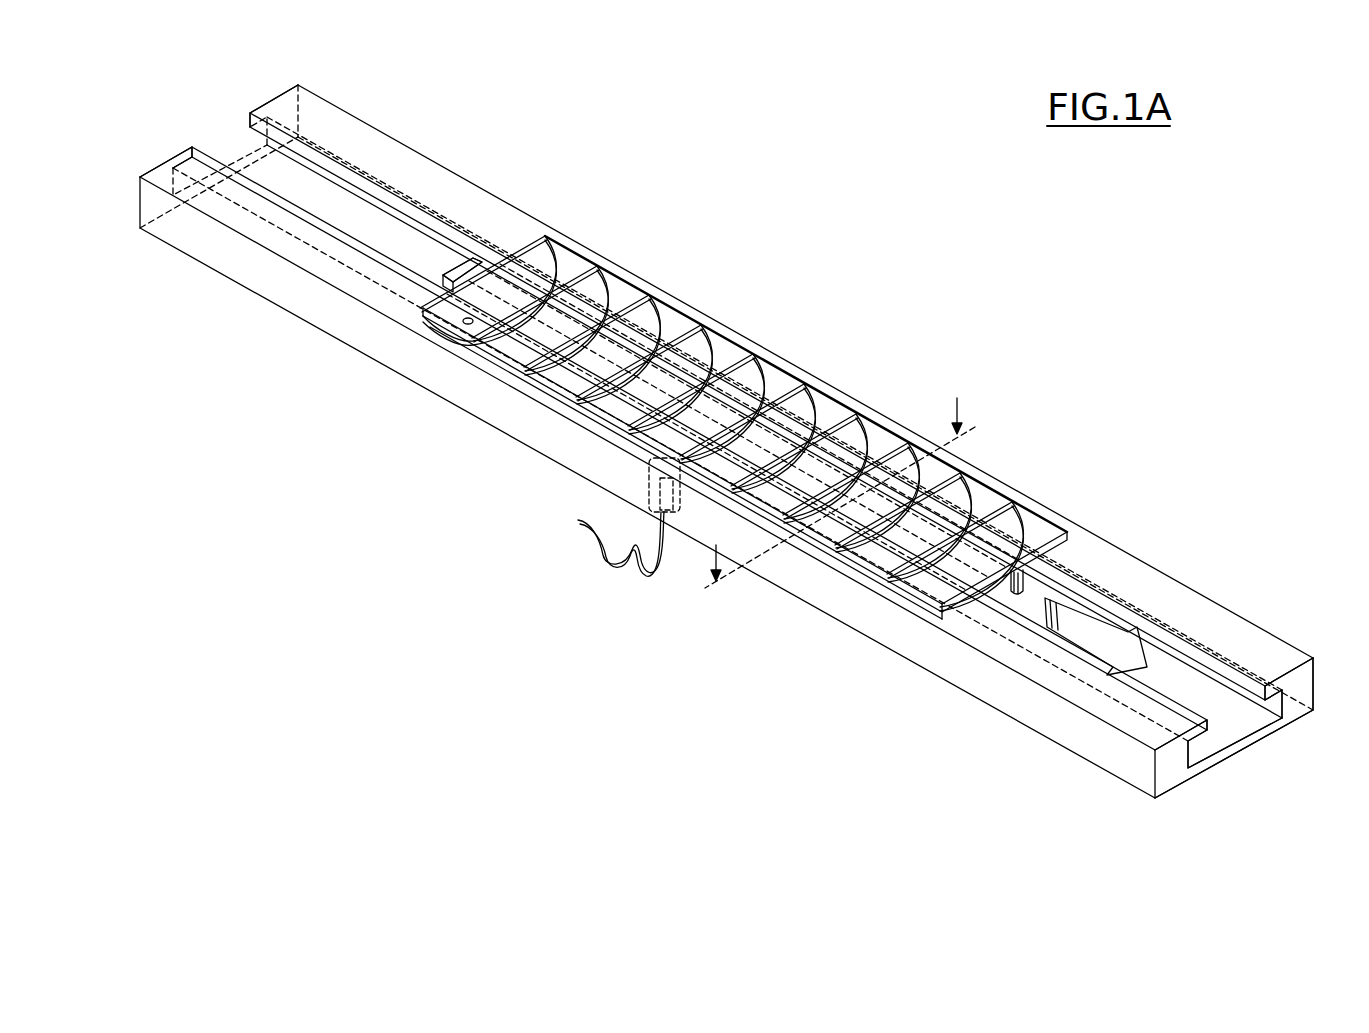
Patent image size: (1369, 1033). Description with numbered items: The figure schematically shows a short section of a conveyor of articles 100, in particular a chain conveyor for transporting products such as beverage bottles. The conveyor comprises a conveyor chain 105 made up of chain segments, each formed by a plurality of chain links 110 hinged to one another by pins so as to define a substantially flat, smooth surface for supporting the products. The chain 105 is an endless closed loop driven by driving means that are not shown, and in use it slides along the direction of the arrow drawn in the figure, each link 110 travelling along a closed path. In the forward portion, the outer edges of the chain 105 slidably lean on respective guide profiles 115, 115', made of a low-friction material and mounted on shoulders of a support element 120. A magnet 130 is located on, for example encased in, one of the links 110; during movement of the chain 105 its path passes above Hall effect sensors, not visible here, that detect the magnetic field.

The conveyor of articles 100 is at (1033, 290).
The conveyor chain 105 is at (687, 296).
The chain link 110 is at (568, 257).
The guide profile 115 is at (711, 475).
The guide profile 115' is at (792, 401).
The support element 120 is at (1245, 757).
The magnet 130 is at (464, 320).